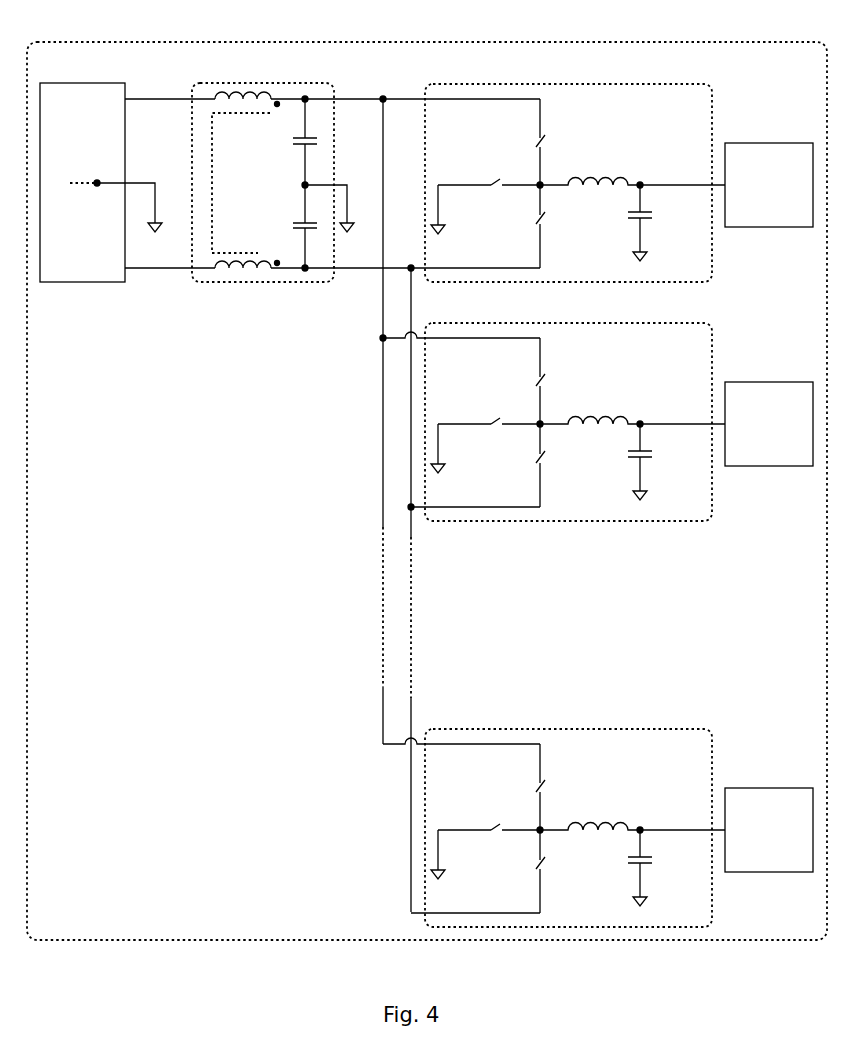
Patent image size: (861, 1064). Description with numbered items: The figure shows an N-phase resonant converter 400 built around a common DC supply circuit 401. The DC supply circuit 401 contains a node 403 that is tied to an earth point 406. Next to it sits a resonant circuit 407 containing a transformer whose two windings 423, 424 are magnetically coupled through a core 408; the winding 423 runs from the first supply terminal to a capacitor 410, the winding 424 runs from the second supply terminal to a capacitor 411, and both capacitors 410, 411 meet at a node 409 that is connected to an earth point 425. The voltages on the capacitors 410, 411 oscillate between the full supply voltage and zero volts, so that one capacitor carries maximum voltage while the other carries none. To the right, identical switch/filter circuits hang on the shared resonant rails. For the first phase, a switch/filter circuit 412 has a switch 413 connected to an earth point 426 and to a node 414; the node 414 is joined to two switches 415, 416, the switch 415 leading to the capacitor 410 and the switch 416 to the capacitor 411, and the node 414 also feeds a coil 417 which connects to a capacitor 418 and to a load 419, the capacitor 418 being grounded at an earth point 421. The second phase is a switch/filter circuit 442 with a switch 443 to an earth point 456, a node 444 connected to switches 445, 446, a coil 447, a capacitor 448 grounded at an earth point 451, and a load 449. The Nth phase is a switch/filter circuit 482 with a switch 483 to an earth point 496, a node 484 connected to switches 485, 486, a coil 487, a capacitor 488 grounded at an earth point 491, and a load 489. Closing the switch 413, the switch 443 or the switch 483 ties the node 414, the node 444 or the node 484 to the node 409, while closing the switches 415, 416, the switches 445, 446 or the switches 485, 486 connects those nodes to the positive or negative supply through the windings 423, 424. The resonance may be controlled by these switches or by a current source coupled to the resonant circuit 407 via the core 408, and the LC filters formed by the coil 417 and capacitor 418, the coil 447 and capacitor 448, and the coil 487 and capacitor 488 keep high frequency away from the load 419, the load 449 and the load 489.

The N-phase resonant converter 400 is at (449, 29).
The DC supply circuit 401 is at (82, 75).
The node 403 is at (96, 182).
The earth point 406 is at (153, 228).
The resonant circuit 407 is at (255, 73).
The core 408 is at (227, 170).
The node 409 is at (303, 187).
The capacitor 410 is at (292, 140).
The capacitor 411 is at (292, 225).
The switch/filter circuit 412 is at (568, 73).
The switch 413 is at (497, 180).
The node 414 is at (538, 187).
The switch 415 is at (556, 123).
The switch 416 is at (556, 200).
The coil 417 is at (593, 177).
The capacitor 418 is at (627, 213).
The load 419 is at (768, 132).
The earth point 421 is at (634, 257).
The winding 423 is at (233, 107).
The winding 424 is at (248, 258).
The earth point 425 is at (348, 233).
The earth point 426 is at (440, 229).
The switch/filter circuit 442 is at (568, 406).
The switch 443 is at (489, 404).
The node 444 is at (517, 439).
The switch 445 is at (562, 381).
The switch 446 is at (564, 465).
The coil 447 is at (590, 403).
The capacitor 448 is at (616, 457).
The load 449 is at (769, 408).
The earth point 451 is at (616, 508).
The earth point 456 is at (453, 464).
The switch/filter circuit 482 is at (568, 812).
The switch 483 is at (489, 810).
The node 484 is at (517, 845).
The switch 485 is at (562, 787).
The switch 486 is at (564, 871).
The coil 487 is at (590, 809).
The capacitor 488 is at (616, 863).
The load 489 is at (769, 814).
The earth point 491 is at (616, 914).
The earth point 496 is at (453, 870).